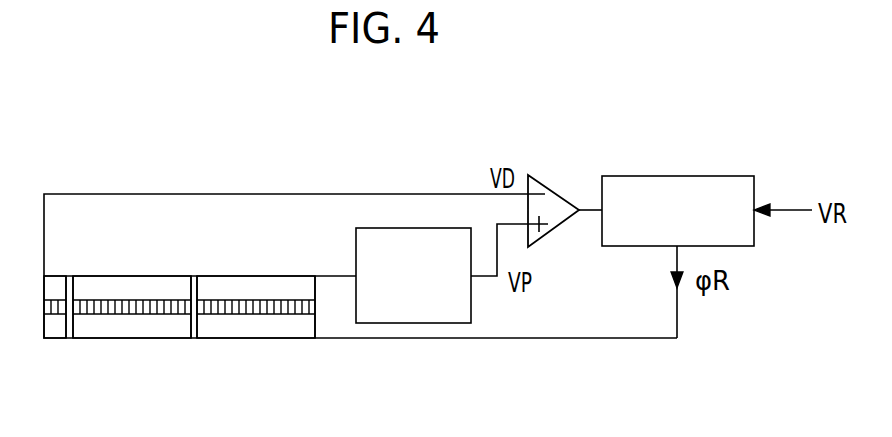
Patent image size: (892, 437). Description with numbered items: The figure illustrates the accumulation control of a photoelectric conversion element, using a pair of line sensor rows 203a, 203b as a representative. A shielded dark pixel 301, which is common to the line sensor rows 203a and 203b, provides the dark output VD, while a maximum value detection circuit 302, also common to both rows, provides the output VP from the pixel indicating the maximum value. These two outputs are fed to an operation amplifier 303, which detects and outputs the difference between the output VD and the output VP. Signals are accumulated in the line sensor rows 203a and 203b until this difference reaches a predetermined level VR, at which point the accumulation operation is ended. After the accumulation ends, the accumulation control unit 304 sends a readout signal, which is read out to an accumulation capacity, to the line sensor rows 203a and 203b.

The line sensor row 203a is at (128, 276).
The line sensor row 203b is at (257, 276).
The shielded dark pixel 301 is at (55, 315).
The maximum value detection circuit 302 is at (471, 315).
The operation amplifier 303 is at (545, 186).
The accumulation control unit 304 is at (678, 176).